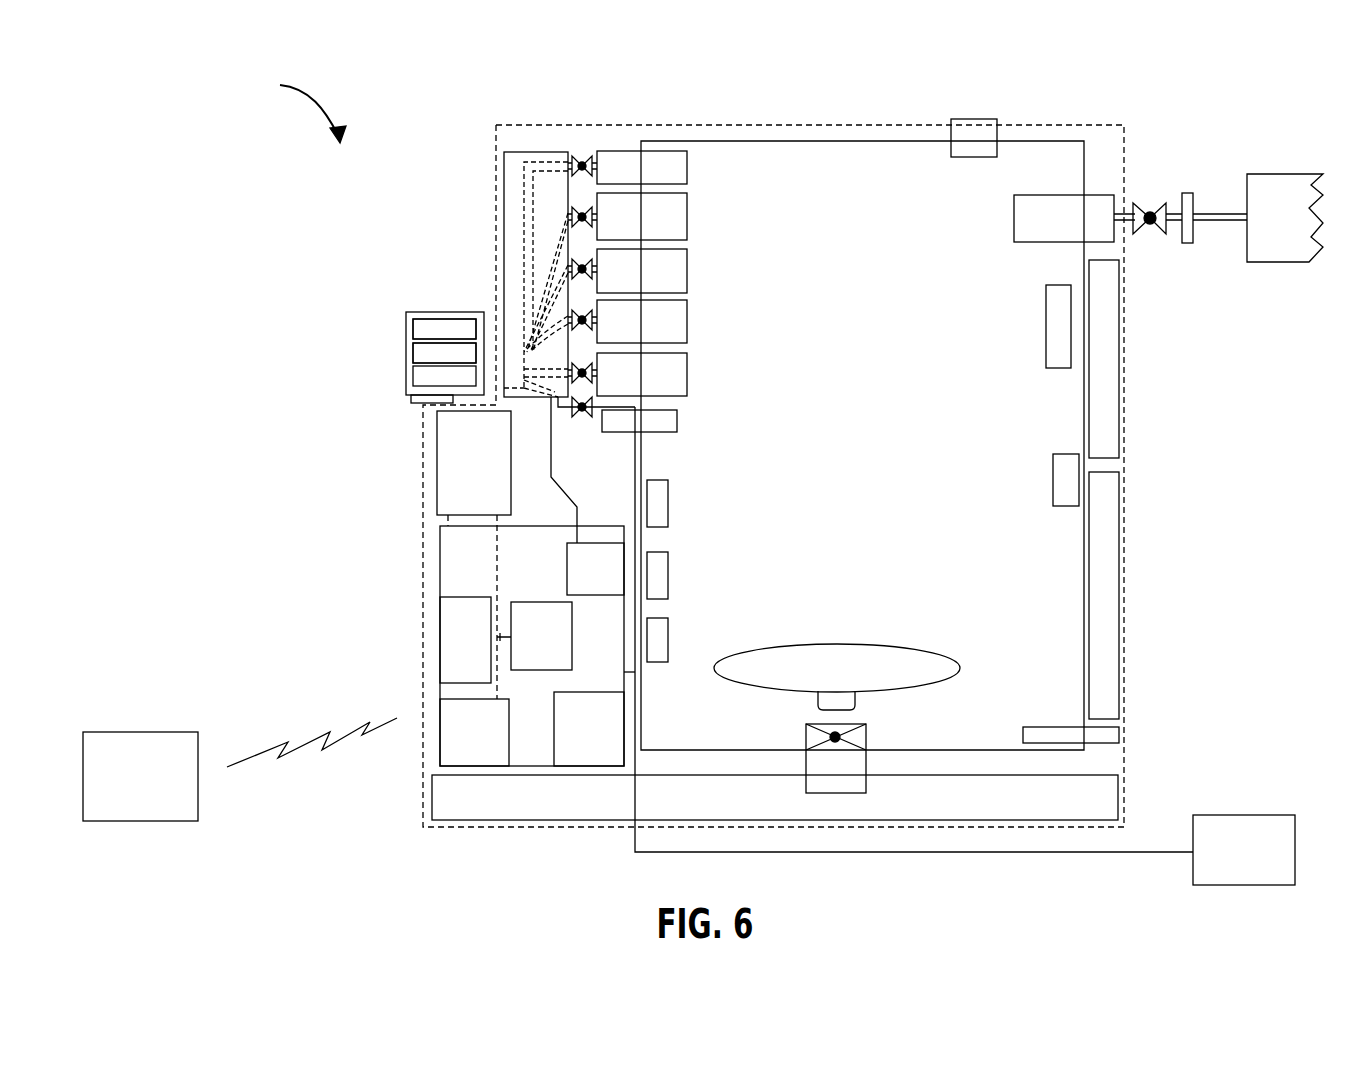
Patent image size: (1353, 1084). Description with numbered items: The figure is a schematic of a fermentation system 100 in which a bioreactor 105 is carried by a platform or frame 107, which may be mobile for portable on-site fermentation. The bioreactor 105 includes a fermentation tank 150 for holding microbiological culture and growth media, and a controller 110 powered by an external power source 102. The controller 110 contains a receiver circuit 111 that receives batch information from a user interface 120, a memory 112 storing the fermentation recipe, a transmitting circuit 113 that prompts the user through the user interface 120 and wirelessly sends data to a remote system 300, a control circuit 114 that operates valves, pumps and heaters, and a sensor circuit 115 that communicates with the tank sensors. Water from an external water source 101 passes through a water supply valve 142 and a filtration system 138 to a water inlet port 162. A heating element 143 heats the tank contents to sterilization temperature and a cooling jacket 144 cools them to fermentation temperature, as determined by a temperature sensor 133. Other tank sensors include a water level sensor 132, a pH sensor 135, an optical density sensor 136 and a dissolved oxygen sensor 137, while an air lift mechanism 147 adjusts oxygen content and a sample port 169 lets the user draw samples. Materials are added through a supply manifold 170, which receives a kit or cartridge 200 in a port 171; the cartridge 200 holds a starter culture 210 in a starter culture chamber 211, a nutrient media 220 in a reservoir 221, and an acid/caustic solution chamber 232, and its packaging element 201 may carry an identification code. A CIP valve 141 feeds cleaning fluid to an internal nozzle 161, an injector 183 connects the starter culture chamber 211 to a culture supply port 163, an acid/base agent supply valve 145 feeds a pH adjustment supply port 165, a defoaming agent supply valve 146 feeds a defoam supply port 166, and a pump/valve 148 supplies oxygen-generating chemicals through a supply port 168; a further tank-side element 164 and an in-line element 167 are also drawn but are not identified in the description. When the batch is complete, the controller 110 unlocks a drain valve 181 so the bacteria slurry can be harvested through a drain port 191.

The fermentation system 100 is at (295, 106).
The external water source 101 is at (1265, 252).
The external power source 102 is at (1248, 838).
The bioreactor 105 is at (840, 125).
The platform or frame 107 is at (467, 802).
The controller 110 is at (440, 557).
The receiver circuit 111 is at (459, 648).
The memory 112 is at (541, 636).
The transmitting circuit 113 is at (459, 740).
The control circuit 114 is at (567, 567).
The sensor circuit 115 is at (585, 753).
The user interface 120 is at (437, 465).
The water level sensor 132 is at (1062, 335).
The temperature sensor 133 is at (660, 500).
The pH sensor 135 is at (660, 570).
The optical density sensor 136 is at (660, 635).
The dissolved oxygen sensor 137 is at (1062, 478).
The filtration system 138 is at (1188, 232).
The CIP valve 141 is at (586, 162).
The water supply valve 142 is at (1150, 210).
The heating element 143 is at (1103, 388).
The cooling jacket 144 is at (1103, 556).
The acid/base agent supply valve 145 is at (575, 215).
The defoaming agent supply valve 146 is at (572, 269).
The air lift mechanism 147 is at (930, 668).
The pump/valve 148 is at (572, 320).
The fermentation tank 150 is at (978, 447).
The internal nozzle 161 is at (672, 165).
The water inlet port 162 is at (1038, 205).
The addition port 163 is at (612, 432).
The fluid container 164 is at (672, 372).
The pH adjustment supply port 165 is at (672, 217).
The defoam supply port 166 is at (672, 272).
The flow meter 167 is at (975, 120).
The supply port 168 is at (672, 322).
The sample port 169 is at (1110, 741).
The supply manifold 170 is at (520, 152).
The port 171 is at (500, 312).
The drain valve 181 is at (866, 738).
The injector 183 is at (563, 409).
The drain port 191 is at (837, 783).
The kit 200 is at (406, 328).
The packaging element 201 is at (413, 402).
The starter culture 210 is at (447, 330).
The starter culture chamber 211 is at (432, 322).
The nutrient media 220 is at (443, 353).
The reservoir 221 is at (413, 350).
The acid/caustic solution chamber 232 is at (437, 377).
The remote system 300 is at (240, 769).